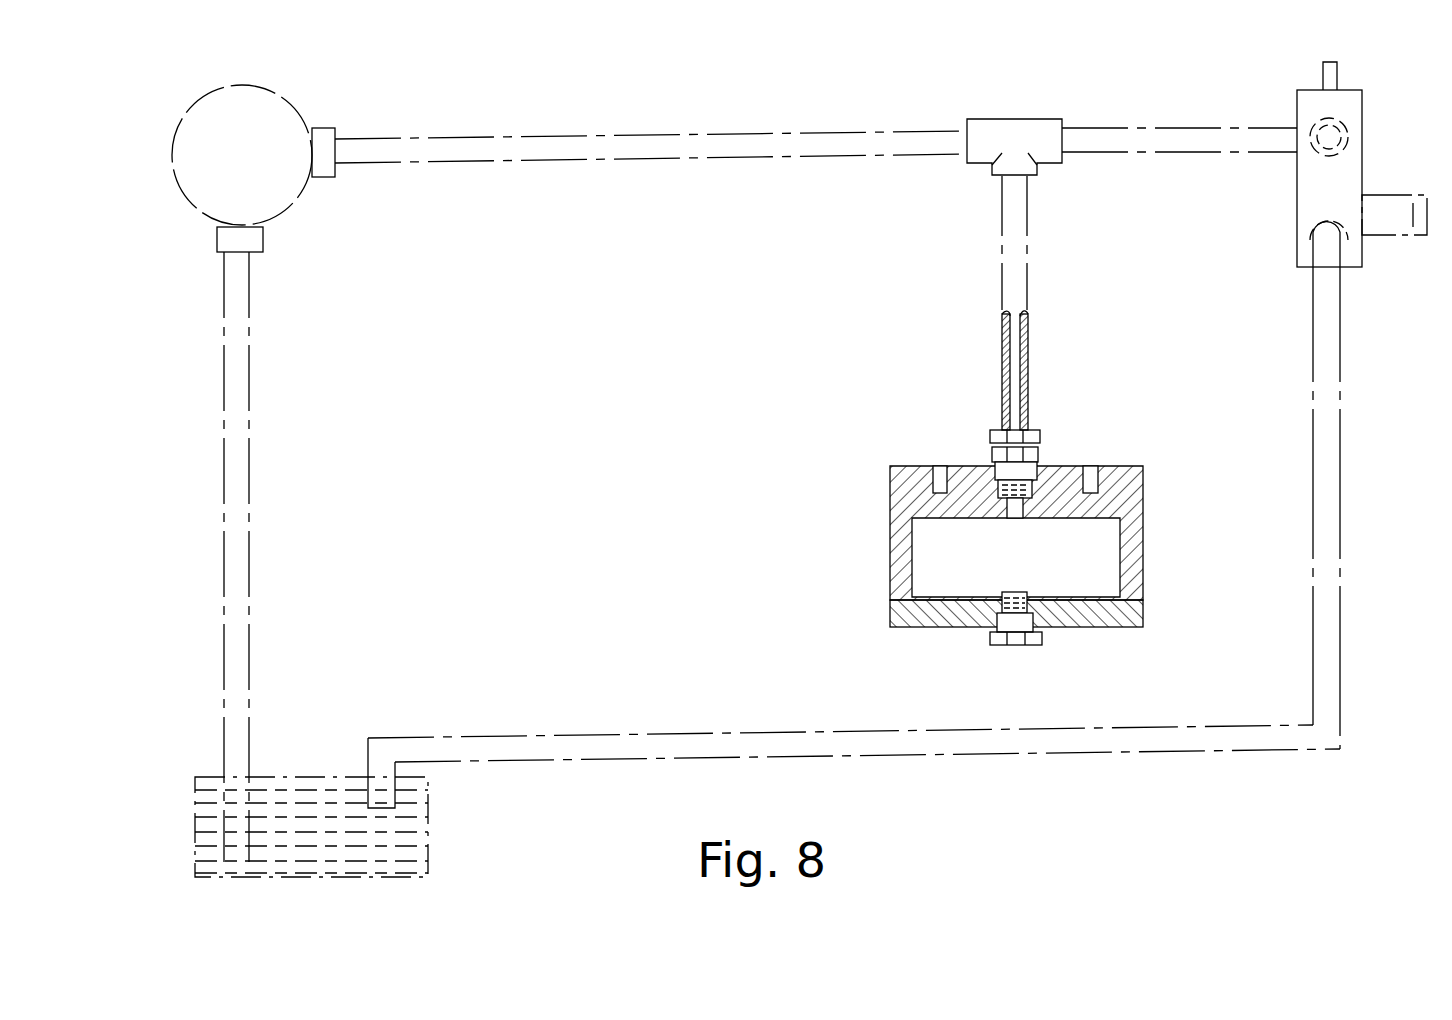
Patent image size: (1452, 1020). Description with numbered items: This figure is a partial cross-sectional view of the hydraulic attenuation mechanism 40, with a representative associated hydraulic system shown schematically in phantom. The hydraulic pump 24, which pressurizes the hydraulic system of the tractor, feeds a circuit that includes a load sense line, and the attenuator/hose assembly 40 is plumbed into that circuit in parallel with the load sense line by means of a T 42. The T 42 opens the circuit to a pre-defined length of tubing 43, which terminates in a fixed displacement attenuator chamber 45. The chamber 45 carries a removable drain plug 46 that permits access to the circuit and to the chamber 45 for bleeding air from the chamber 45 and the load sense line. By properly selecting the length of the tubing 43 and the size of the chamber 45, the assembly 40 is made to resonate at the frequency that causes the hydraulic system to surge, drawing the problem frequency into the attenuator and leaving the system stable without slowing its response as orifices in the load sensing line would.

The hydraulic pump 24 is at (299, 197).
The hydraulic attenuation mechanism 40 is at (976, 92).
The T 42 is at (1062, 101).
The tubing 43 is at (1028, 335).
The attenuator chamber 45 is at (1143, 521).
The drain plug 46 is at (1013, 647).